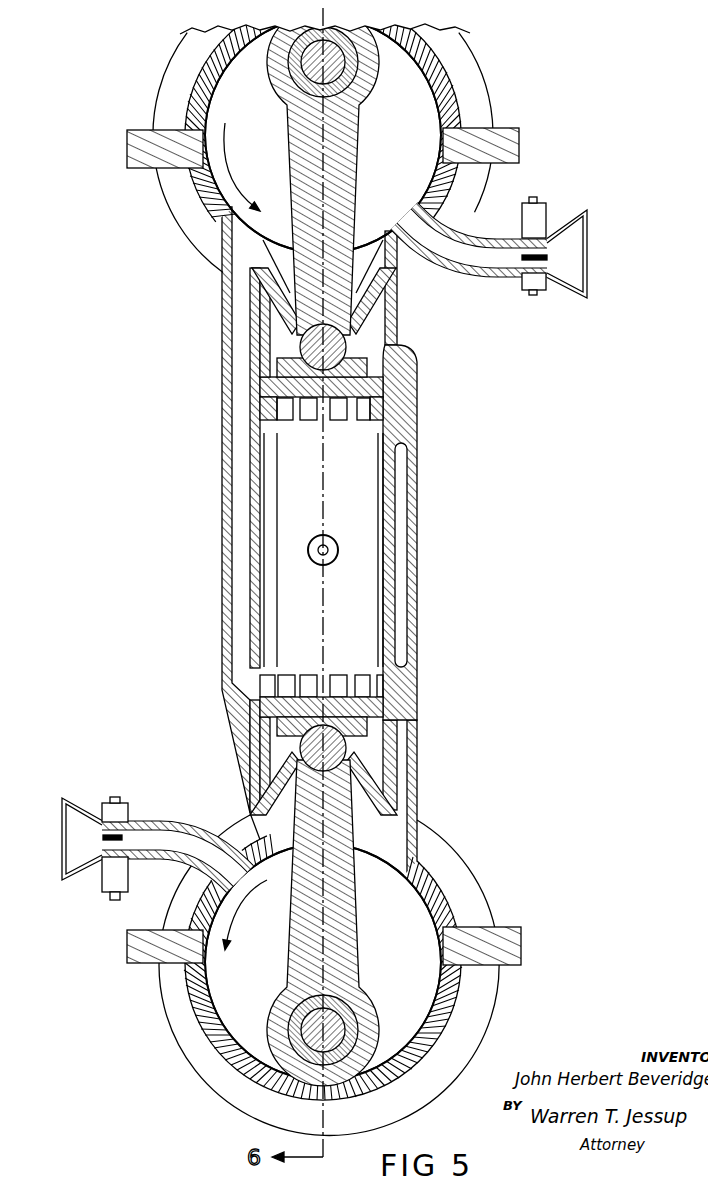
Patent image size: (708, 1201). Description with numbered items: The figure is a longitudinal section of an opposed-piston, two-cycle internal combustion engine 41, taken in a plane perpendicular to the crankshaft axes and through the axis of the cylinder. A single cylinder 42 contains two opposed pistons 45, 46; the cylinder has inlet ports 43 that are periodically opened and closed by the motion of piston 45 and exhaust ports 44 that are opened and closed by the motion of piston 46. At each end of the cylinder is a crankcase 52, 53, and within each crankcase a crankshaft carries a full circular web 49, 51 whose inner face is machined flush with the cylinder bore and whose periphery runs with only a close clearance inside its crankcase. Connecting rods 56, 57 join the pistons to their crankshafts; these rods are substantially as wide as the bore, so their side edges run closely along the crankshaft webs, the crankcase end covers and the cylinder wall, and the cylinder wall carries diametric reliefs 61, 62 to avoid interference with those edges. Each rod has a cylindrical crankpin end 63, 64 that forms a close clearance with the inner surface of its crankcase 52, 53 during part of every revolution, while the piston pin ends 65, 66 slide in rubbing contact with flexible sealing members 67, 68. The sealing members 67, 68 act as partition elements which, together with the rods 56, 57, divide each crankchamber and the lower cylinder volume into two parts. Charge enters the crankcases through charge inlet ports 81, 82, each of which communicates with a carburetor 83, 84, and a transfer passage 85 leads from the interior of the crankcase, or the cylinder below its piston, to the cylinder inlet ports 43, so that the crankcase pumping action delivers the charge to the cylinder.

The engine 41 is at (472, 455).
The cylinder 42 is at (417, 505).
The inlet ports 43 is at (380, 683).
The exhaust ports 44 is at (380, 407).
The piston 45 is at (383, 699).
The piston 46 is at (397, 347).
The crankshaft web 49 is at (372, 873).
The crankshaft web 51 is at (406, 80).
The crankcase 52 is at (421, 868).
The crankcase 53 is at (454, 88).
The connecting rod 56 is at (343, 920).
The connecting rod 57 is at (361, 120).
The diametric relief 61 is at (357, 828).
The diametric relief 62 is at (398, 245).
The crankpin end 63 is at (273, 1032).
The crankpin end 64 is at (268, 62).
The piston pin end 65 is at (350, 753).
The piston pin end 66 is at (365, 363).
The flexible sealing member 67 is at (257, 732).
The flexible sealing member 68 is at (257, 342).
The charge inlet port 81 is at (235, 868).
The charge inlet port 82 is at (411, 223).
The carburetor 83 is at (128, 812).
The carburetor 84 is at (549, 212).
The transfer passage 85 is at (238, 370).